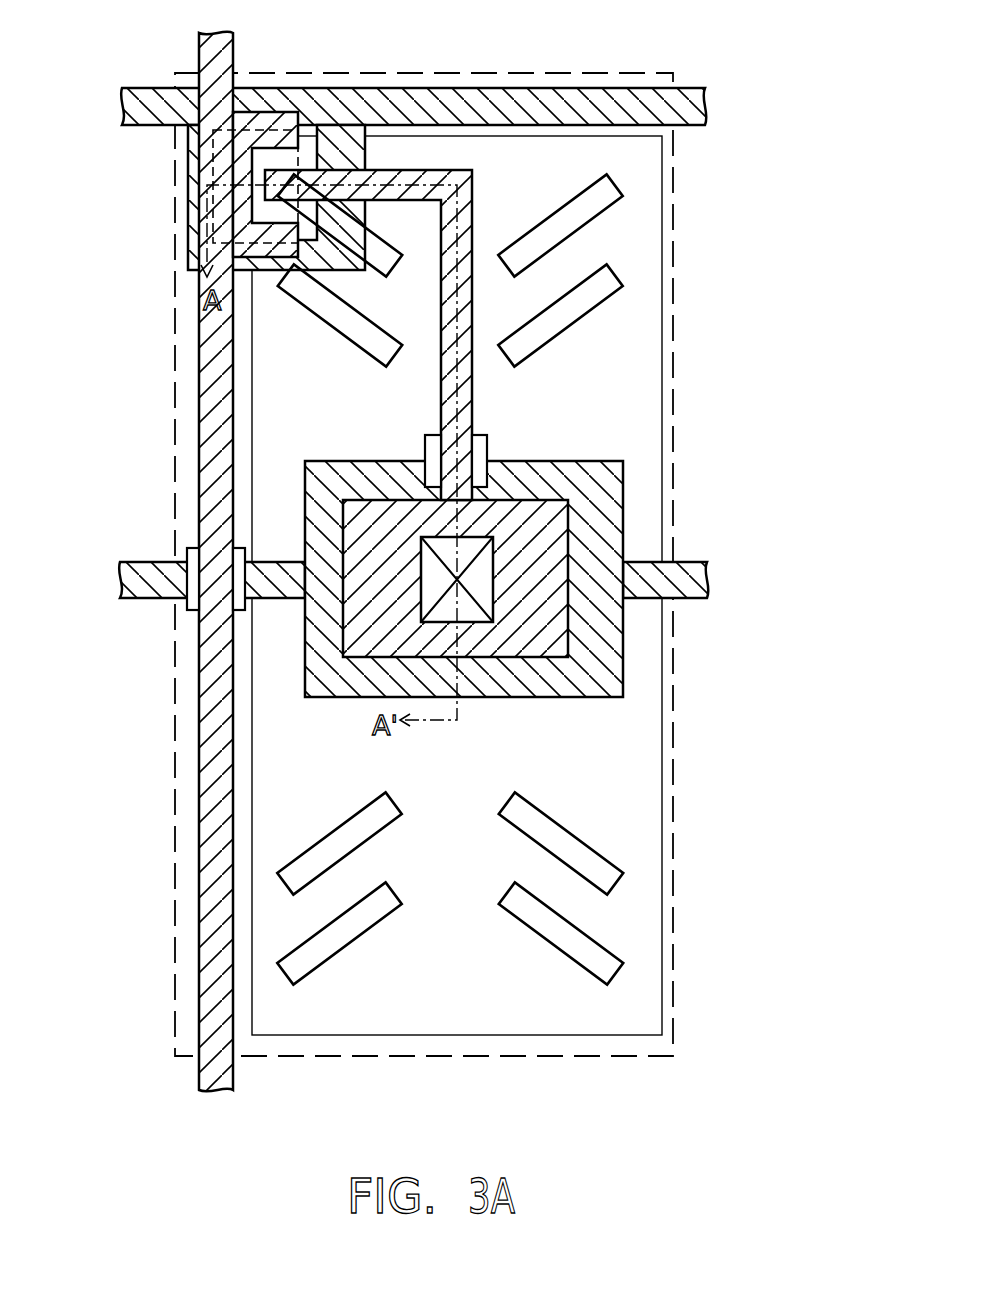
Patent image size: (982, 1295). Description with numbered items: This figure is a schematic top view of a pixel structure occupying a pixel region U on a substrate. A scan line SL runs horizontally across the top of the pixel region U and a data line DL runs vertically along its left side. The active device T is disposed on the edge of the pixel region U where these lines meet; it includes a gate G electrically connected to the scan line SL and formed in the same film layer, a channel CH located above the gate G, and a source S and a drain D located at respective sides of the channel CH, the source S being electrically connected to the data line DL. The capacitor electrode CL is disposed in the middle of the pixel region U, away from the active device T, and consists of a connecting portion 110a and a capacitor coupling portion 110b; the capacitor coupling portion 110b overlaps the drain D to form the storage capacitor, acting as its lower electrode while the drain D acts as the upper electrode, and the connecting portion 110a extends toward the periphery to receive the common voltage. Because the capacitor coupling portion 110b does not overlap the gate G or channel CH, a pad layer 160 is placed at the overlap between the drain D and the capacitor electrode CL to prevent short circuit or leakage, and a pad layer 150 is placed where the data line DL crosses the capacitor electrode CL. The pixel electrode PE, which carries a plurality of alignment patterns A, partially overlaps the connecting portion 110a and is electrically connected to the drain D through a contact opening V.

The scan line SL is at (128, 107).
The data line DL is at (205, 866).
The active device T is at (440, 562).
The source S is at (190, 137).
The channel CH is at (198, 165).
The drain D is at (200, 182).
The gate G is at (200, 241).
The pixel region U is at (674, 168).
The alignment patterns A is at (610, 270).
The pixel electrode PE is at (663, 390).
The pad layer 160 is at (487, 450).
The contact opening V is at (497, 550).
The connecting portion 110a is at (690, 582).
The capacitor coupling portion 110b is at (598, 660).
The capacitor electrode CL is at (477, 579).
The pad layer 150 is at (192, 608).